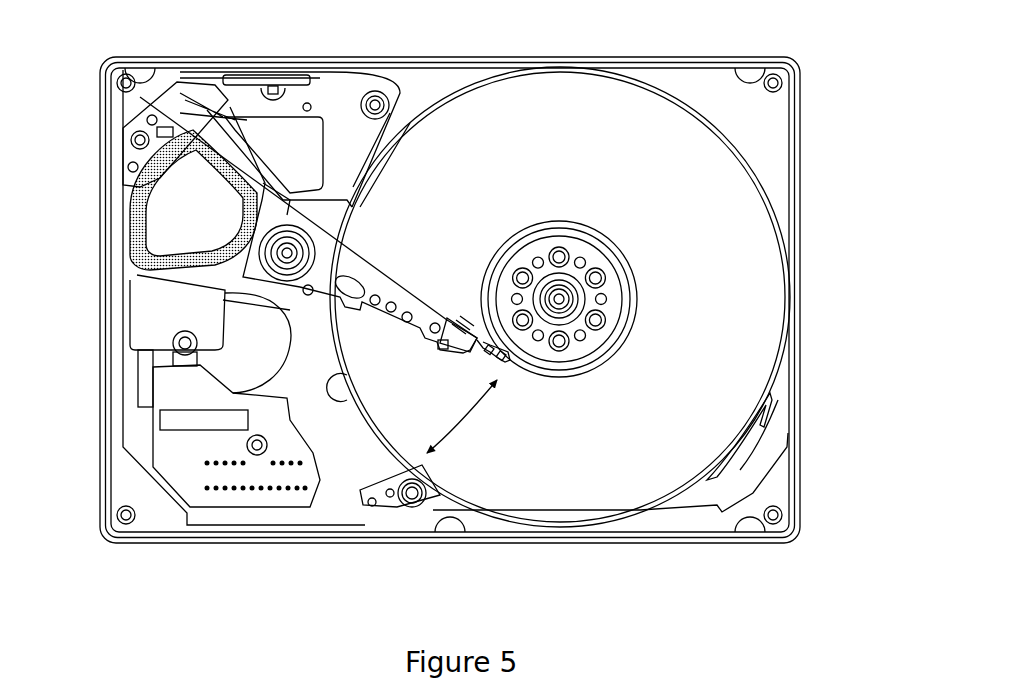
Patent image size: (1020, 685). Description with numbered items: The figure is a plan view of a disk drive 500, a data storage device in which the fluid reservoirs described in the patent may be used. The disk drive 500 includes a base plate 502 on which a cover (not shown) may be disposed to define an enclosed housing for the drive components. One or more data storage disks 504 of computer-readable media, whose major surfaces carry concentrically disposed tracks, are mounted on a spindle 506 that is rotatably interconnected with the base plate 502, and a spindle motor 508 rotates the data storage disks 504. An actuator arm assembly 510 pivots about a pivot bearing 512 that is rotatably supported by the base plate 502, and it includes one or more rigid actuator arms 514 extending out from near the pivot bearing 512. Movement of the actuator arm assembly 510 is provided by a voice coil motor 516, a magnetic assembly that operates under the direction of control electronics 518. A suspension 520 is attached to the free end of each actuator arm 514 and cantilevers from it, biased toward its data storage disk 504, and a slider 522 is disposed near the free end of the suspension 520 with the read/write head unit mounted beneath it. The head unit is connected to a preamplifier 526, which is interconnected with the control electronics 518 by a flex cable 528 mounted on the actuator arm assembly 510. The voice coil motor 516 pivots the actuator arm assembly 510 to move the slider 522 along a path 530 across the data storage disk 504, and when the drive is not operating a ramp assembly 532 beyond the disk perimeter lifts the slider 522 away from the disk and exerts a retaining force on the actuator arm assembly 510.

The disk drive 500 is at (815, 120).
The base plate 502 is at (648, 57).
The data storage disk 504 is at (545, 103).
The spindle 506 is at (540, 228).
The spindle motor 508 is at (575, 285).
The actuator arm assembly 510 is at (365, 268).
The pivot bearing 512 is at (268, 248).
The actuator arm 514 is at (402, 327).
The voice coil motor 516 is at (180, 217).
The control electronics 518 is at (247, 493).
The suspension 520 is at (477, 327).
The slider 522 is at (505, 360).
The preamplifier 526 is at (225, 308).
The flex cable 528 is at (230, 393).
The path 530 is at (473, 420).
The ramp assembly 532 is at (390, 498).